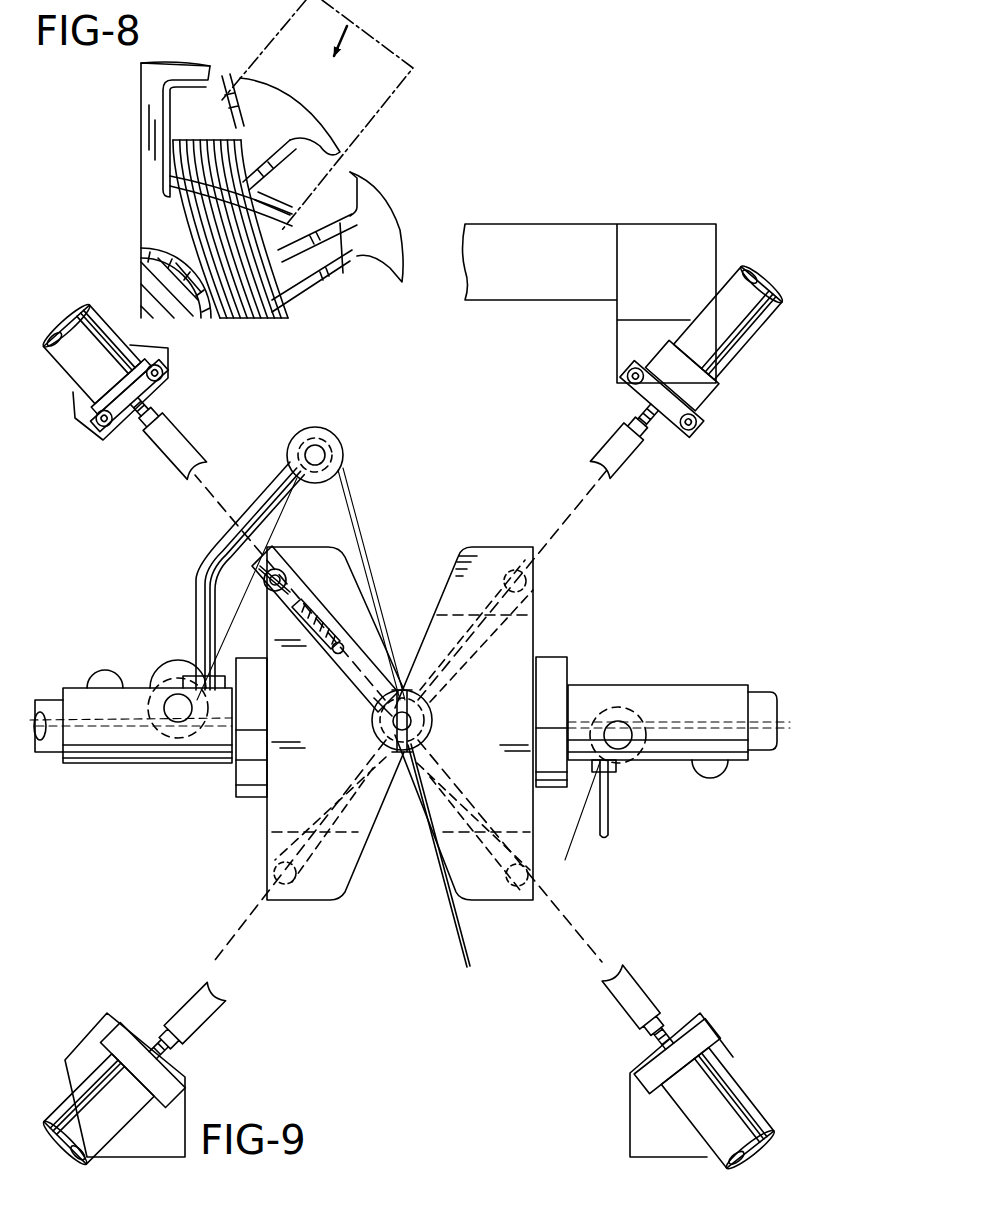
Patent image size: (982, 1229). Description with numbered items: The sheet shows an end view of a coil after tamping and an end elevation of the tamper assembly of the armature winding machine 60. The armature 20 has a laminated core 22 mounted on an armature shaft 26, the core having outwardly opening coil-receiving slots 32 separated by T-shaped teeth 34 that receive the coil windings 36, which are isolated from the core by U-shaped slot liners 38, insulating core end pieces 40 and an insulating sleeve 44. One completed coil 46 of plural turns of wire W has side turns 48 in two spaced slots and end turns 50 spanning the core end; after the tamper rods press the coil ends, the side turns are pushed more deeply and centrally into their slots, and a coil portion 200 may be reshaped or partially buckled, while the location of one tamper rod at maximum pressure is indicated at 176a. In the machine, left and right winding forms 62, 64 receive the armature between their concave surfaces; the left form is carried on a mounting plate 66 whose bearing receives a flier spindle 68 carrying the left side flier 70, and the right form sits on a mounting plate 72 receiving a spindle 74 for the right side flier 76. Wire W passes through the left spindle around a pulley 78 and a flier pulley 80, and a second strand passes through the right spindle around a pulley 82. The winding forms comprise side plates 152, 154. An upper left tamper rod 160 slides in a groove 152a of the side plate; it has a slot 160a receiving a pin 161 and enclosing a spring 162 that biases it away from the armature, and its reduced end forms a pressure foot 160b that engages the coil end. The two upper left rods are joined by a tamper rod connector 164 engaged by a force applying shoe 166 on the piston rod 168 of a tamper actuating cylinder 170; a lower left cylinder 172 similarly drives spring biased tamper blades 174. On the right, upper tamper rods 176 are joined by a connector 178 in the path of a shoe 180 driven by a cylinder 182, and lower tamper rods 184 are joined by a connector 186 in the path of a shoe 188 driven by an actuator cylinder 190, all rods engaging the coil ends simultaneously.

In FIG. 8, the armature 20 is at (130, 221).
In FIG. 9, the armature 20 is at (402, 762).
In FIG. 8, the laminated core 22 is at (186, 50).
In FIG. 8, the armature shaft 26 is at (148, 286).
In FIG. 9, the armature shaft 26 is at (393, 727).
In FIG. 8, the coil-receiving slots 32 is at (224, 66).
In FIG. 8, the T-shaped teeth 34 is at (300, 118).
In FIG. 8, the coil windings 36 is at (298, 298).
In FIG. 8, the U-shaped slot liners 38 is at (358, 268).
In FIG. 8, the insulating core end pieces 40 is at (141, 99).
In FIG. 8, the insulating sleeve 44 is at (145, 255).
In FIG. 8, the coil 46 is at (208, 132).
In FIG. 9, the coil 46 is at (420, 723).
In FIG. 8, the side turns 48 is at (223, 150).
In FIG. 8, the end turns 50 is at (200, 230).
In FIG. 8, the location of tamper rod 176a is at (406, 83).
In FIG. 8, the coil portion 200 is at (258, 195).
In FIG. 9, the armature winding machine 60 is at (186, 545).
In FIG. 9, the left side winding form 62 is at (266, 817).
In FIG. 9, the right side winding form 64 is at (539, 645).
In FIG. 9, the mounting plate 66 is at (240, 770).
In FIG. 9, the flier spindle 68 is at (50, 702).
In FIG. 9, the left side flier 70 is at (196, 633).
In FIG. 9, the mounting plate 72 is at (565, 665).
In FIG. 9, the spindle 74 is at (675, 688).
In FIG. 9, the right side flier 76 is at (613, 813).
In FIG. 9, the pulley 78 is at (167, 680).
In FIG. 9, the pulley 80 is at (340, 449).
In FIG. 9, the pulley 82 is at (628, 763).
In FIG. 9, the side plate 152 is at (322, 546).
In FIG. 9, the groove 152a is at (366, 702).
In FIG. 9, the side plate 154 is at (486, 547).
In FIG. 9, the tamper rod 160 is at (296, 581).
In FIG. 9, the slot 160a is at (318, 604).
In FIG. 9, the pressure foot 160b is at (378, 651).
In FIG. 9, the pin 161 is at (320, 651).
In FIG. 9, the spring 162 is at (273, 630).
In FIG. 9, the tamper rod connector 164 is at (285, 558).
In FIG. 9, the force applying shoe 166 is at (174, 449).
In FIG. 9, the piston rod 168 is at (149, 395).
In FIG. 9, the tamper actuating cylinder 170 is at (62, 339).
In FIG. 9, the lower left side tamper actuating cylinder 172 is at (103, 1123).
In FIG. 9, the tamper blades 174 is at (272, 879).
In FIG. 9, the tamper rods 176 is at (541, 573).
In FIG. 9, the tamper rod connector 178 is at (537, 597).
In FIG. 9, the force applying shoe 180 is at (622, 441).
In FIG. 9, the tamper actuating cylinder 182 is at (712, 307).
In FIG. 9, the tamper rods 184 is at (542, 880).
In FIG. 9, the tamper rod connector 186 is at (515, 902).
In FIG. 9, the force applying shoe 188 is at (633, 996).
In FIG. 9, the tamper rod actuator cylinder 190 is at (738, 1102).
In FIG. 9, the wire W is at (230, 606).